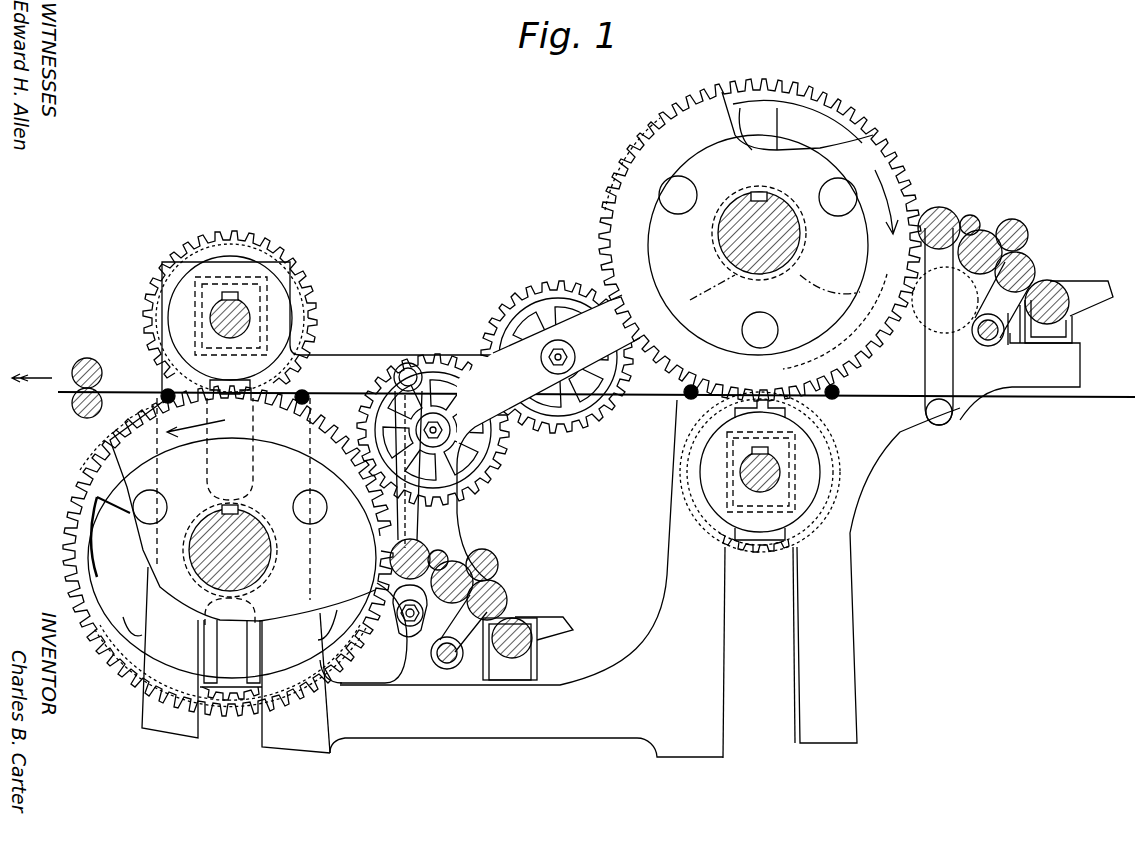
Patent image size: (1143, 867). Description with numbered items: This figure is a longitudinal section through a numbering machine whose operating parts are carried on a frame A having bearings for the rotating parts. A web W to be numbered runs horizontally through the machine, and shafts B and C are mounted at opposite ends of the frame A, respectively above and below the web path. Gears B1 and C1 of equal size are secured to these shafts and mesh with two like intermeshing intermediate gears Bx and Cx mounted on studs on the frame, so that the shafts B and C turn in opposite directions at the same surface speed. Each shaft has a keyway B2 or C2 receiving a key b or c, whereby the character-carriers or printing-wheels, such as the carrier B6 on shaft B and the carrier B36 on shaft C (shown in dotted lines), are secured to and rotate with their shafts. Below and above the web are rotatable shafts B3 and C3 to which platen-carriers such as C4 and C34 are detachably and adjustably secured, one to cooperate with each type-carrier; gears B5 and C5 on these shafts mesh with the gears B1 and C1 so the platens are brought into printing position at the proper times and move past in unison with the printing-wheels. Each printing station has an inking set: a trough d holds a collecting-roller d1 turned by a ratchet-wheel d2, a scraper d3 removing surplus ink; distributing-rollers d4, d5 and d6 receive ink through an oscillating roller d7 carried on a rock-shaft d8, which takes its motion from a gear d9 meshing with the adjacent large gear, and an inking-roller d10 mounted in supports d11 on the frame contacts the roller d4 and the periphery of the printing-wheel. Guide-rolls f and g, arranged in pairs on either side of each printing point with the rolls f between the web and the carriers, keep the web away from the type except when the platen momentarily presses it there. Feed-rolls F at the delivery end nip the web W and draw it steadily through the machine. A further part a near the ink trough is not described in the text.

The frame A is at (440, 352).
The web W is at (1028, 398).
The shaft B is at (800, 243).
The gear B1 is at (785, 90).
The keyway B2 is at (782, 206).
The key b is at (751, 195).
The rotatable shaft B3 is at (777, 466).
The gear B5 is at (782, 556).
The character-carrier B6 is at (632, 140).
The intermediate gear Bx is at (548, 292).
The character-carrier B36 is at (137, 405).
The shaft C is at (268, 560).
The gear C1 is at (78, 468).
The keyway C2 is at (250, 520).
The key c is at (230, 505).
The rotatable shaft C3 is at (212, 318).
The platen-carrier C4 is at (712, 497).
The gear C5 is at (152, 290).
The platen-carrier C34 is at (300, 352).
The intermediate gear Cx is at (440, 430).
The feed-rolls F is at (76, 364).
The guide-rolls f is at (163, 390).
The guide-rolls g is at (686, 396).
The trough d is at (560, 637).
The collecting-roller d1 is at (526, 624).
The ratchet-wheel d2 is at (518, 680).
The scraper d3 is at (562, 616).
The distributing-roller d4 is at (462, 565).
The distributing-roller d5 is at (497, 560).
The distributing-roller d6 is at (445, 552).
The oscillating roller d7 is at (506, 594).
The rock-shaft d8 is at (449, 670).
The gear d9 is at (400, 630).
The inking-roller d10 is at (420, 545).
The supports d11 is at (425, 451).
The wedge a is at (1085, 308).